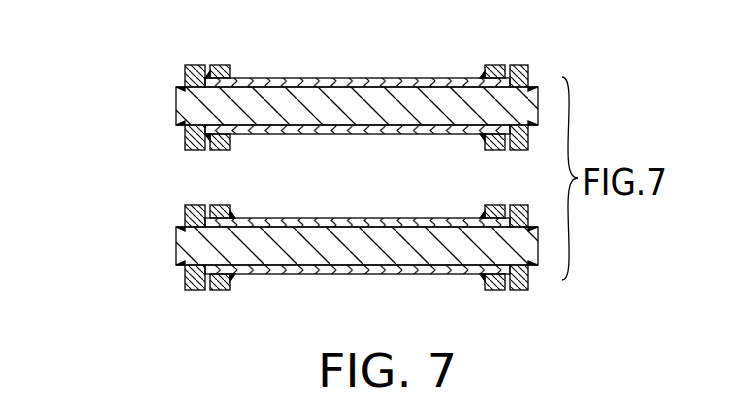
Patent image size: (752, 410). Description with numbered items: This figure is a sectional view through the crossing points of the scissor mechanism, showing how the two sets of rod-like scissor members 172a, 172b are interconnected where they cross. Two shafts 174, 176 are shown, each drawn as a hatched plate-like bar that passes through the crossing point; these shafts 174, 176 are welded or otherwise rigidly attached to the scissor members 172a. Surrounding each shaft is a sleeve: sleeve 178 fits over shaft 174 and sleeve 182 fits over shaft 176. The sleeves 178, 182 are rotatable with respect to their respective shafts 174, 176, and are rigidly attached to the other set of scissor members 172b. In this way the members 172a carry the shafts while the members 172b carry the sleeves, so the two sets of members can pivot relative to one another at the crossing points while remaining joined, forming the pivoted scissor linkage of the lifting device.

The scissor members 172a is at (185, 73).
The scissor members 172b is at (230, 68).
The shaft 174 is at (176, 112).
The shaft 176 is at (176, 243).
The sleeve 178 is at (380, 78).
The sleeve 182 is at (371, 217).